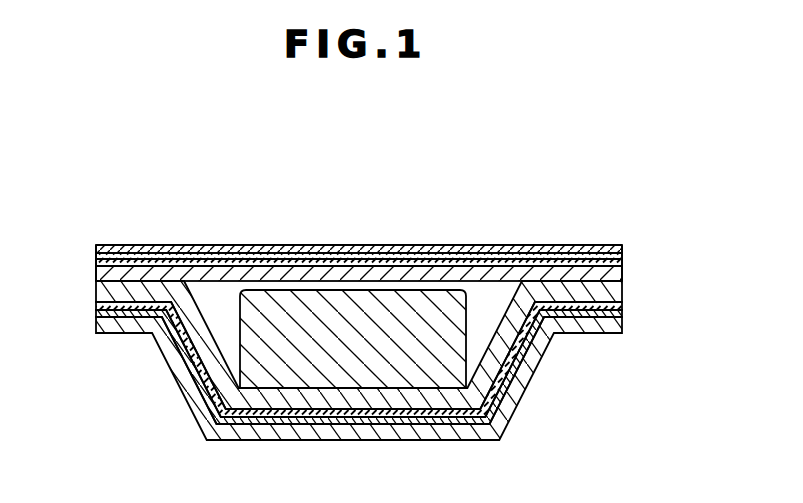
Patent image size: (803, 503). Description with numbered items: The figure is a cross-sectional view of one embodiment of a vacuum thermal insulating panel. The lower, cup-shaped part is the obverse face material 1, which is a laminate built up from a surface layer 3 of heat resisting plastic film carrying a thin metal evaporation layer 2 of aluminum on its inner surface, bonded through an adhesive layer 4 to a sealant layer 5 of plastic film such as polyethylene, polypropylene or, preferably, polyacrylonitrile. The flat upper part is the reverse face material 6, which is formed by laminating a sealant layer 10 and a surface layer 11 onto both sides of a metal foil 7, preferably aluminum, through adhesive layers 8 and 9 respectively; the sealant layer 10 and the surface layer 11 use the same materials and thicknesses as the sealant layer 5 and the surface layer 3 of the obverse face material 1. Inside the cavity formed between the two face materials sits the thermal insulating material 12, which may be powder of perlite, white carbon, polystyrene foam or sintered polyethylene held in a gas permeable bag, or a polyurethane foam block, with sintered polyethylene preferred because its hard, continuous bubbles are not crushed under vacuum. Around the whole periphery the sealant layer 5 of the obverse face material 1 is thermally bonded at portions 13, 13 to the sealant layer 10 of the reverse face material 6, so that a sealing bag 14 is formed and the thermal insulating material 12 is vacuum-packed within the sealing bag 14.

The obverse face material 1 is at (369, 352).
The metal evaporation layer 2 is at (612, 313).
The surface layer 3 is at (598, 333).
The adhesive layer 4 is at (612, 306).
The sealant layer 5 is at (617, 290).
The reverse face material 6 is at (362, 215).
The metal foil 7 is at (312, 260).
The adhesive layer 8 is at (268, 266).
The adhesive layer 9 is at (345, 256).
The sealant layer 10 is at (227, 271).
The surface layer 11 is at (388, 248).
The thermal insulating material 12 is at (443, 302).
The thermally bonded portion 13 is at (152, 268).
The sealing bag 14 is at (557, 233).